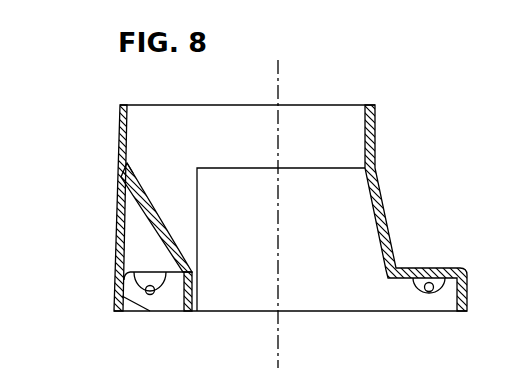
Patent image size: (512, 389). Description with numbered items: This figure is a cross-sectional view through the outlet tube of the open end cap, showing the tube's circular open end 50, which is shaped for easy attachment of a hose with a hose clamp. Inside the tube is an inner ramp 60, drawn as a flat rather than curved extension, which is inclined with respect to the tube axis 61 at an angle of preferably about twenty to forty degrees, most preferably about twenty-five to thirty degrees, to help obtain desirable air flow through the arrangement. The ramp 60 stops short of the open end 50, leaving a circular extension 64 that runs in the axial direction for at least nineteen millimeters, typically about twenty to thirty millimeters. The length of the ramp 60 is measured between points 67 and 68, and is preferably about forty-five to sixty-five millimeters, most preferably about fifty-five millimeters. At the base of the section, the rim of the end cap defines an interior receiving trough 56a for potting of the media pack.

The circular open end 50 is at (122, 104).
The axis 61 is at (280, 76).
The circular extension 64 is at (133, 128).
The point 68 is at (130, 163).
The inner ramp 60 is at (148, 204).
The point 67 is at (193, 279).
The interior receiving trough 56a is at (150, 311).